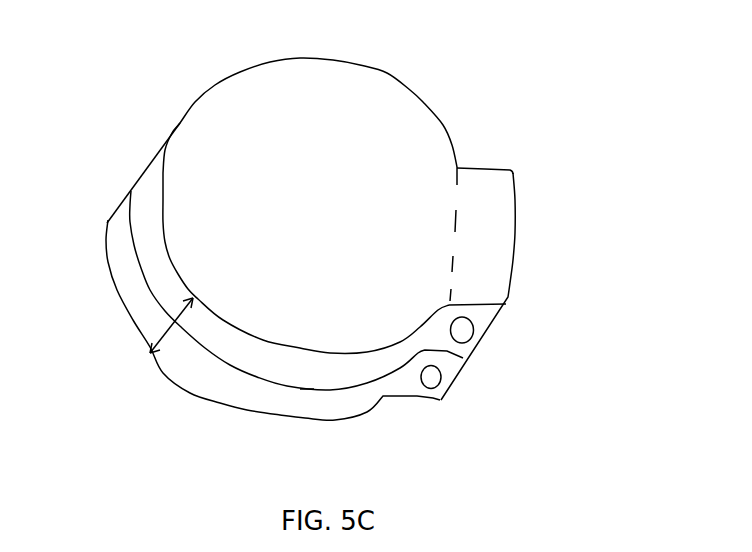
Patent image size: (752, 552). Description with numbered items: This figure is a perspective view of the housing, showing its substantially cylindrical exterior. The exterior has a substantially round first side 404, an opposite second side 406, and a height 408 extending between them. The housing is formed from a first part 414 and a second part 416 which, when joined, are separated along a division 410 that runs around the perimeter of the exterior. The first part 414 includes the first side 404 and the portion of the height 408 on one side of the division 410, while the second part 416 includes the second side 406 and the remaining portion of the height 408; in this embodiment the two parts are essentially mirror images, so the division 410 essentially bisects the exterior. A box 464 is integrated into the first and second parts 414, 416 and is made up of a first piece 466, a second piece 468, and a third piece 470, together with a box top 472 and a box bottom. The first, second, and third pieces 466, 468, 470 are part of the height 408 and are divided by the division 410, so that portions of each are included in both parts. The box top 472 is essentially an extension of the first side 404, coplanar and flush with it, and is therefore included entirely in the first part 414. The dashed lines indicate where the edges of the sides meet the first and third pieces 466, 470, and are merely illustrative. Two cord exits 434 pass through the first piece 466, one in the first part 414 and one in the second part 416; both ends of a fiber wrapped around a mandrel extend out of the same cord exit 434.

The first side 404 is at (342, 205).
The second side 406 is at (218, 402).
The height 408 is at (188, 326).
The division 410 is at (307, 390).
The first part 414 is at (157, 173).
The second part 416 is at (115, 221).
The cord exit 434 is at (467, 332).
The box 464 is at (500, 257).
The first piece 466 is at (484, 305).
The second piece 468 is at (517, 200).
The third piece 470 is at (485, 167).
The box top 472 is at (498, 238).